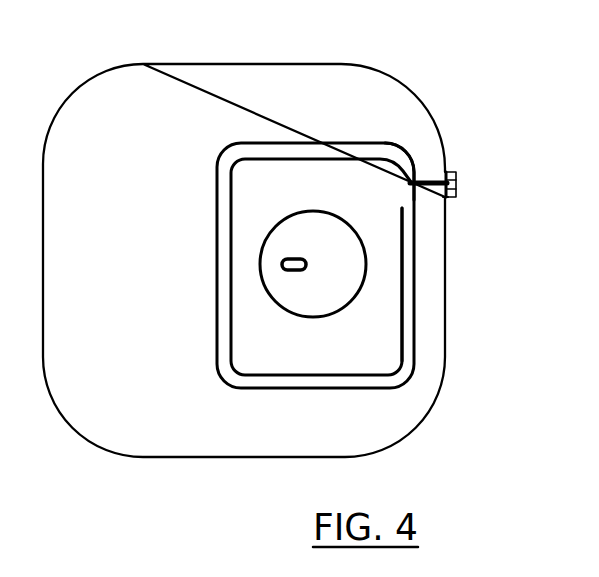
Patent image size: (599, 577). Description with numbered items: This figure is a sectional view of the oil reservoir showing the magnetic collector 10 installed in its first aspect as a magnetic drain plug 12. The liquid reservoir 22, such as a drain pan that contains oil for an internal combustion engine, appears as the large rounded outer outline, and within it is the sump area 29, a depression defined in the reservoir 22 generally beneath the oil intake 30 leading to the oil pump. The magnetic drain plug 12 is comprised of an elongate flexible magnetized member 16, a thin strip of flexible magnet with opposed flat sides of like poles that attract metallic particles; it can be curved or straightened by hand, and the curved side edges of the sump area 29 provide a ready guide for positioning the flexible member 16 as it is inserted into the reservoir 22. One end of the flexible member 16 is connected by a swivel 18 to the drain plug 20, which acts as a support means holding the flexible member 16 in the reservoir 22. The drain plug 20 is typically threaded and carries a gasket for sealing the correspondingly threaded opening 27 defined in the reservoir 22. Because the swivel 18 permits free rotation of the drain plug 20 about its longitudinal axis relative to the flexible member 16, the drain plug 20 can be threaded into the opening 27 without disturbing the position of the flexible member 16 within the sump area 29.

The magnetic collector 10 is at (203, 330).
The magnetic drain plug 12 is at (283, 141).
The flexible magnetized member 16 is at (398, 167).
The swivel 18 is at (431, 175).
The drain plug 20 is at (455, 170).
The liquid reservoir 22 is at (172, 398).
The threaded opening 27 is at (444, 198).
The sump area 29 is at (407, 343).
The oil intake 30 is at (355, 267).